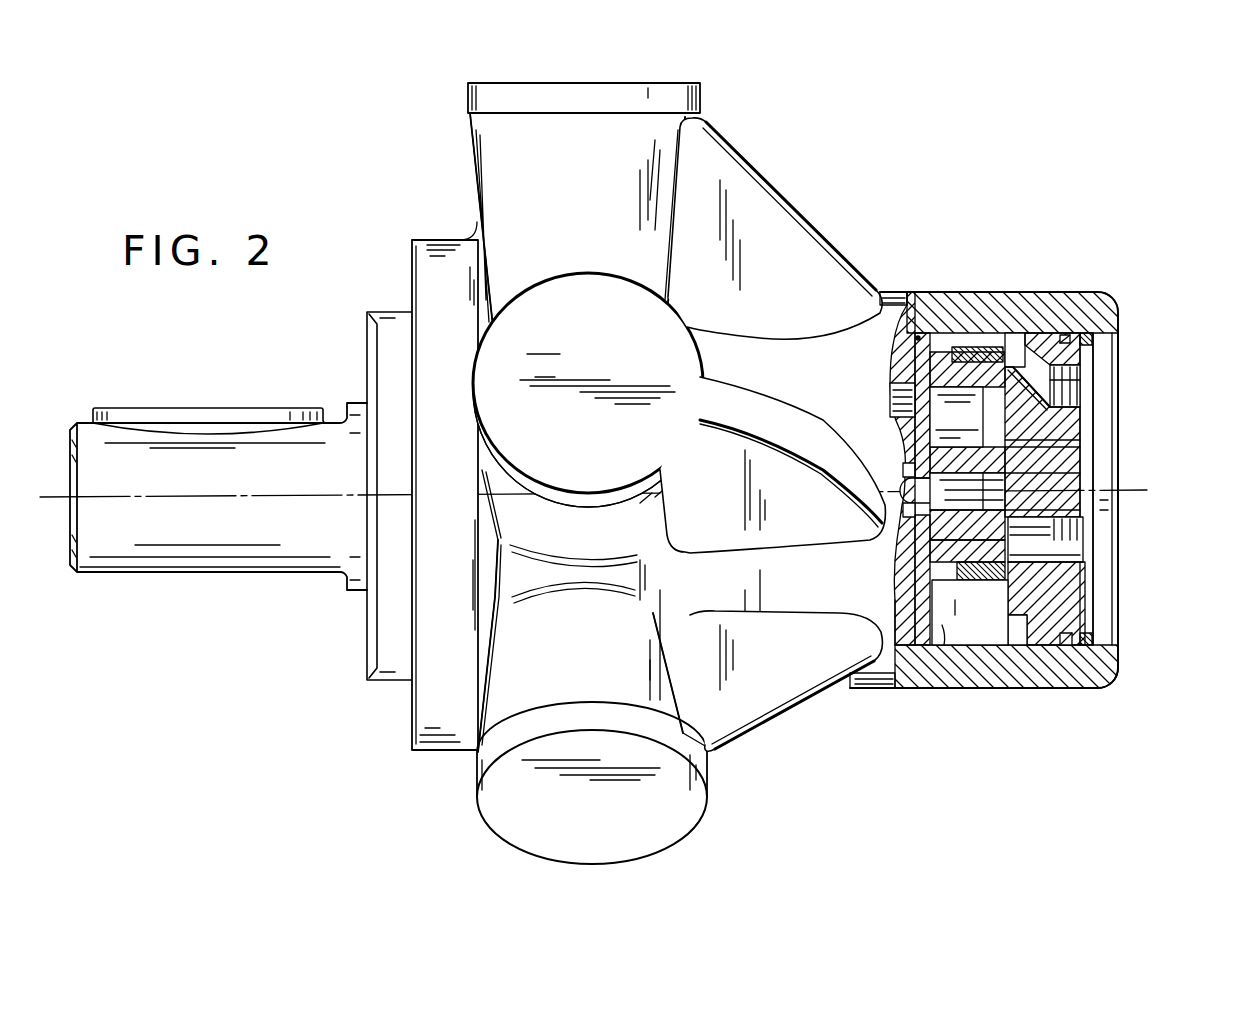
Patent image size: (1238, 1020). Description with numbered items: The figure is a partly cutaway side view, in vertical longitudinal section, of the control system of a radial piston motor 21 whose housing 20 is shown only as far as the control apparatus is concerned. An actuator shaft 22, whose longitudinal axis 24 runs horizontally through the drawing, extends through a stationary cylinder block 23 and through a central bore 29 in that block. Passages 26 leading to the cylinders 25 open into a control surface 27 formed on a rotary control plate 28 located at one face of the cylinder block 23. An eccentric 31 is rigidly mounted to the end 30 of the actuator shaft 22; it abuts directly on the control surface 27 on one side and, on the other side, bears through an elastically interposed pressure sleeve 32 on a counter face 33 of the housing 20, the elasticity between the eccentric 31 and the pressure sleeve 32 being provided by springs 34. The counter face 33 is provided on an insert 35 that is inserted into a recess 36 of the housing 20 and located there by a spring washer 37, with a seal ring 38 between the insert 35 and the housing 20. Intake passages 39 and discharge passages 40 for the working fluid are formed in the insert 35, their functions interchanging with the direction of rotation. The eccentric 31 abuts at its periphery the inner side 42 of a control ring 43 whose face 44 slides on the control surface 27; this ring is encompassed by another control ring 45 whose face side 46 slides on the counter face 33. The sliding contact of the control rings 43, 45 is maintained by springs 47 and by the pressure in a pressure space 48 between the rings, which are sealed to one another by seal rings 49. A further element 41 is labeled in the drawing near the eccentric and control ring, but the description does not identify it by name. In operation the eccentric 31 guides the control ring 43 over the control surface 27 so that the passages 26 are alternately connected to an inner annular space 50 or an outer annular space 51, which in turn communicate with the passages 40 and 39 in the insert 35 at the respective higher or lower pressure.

The housing 20 is at (1092, 680).
The motor 21 is at (787, 733).
The actuator shaft 22 is at (123, 550).
The stationary cylinder block 23 is at (440, 700).
The longitudinal axis 24 is at (213, 497).
The cylinders 25 is at (488, 157).
The passages 26 is at (890, 385).
The control surface 27 is at (945, 345).
The rotary control plate 28 is at (922, 345).
The central bore 29 is at (903, 523).
The end of the actuator shaft 30 is at (1080, 490).
The eccentric 31 is at (903, 540).
The pressure sleeve 32 is at (1080, 473).
The counter face 33 is at (1003, 605).
The springs 34 is at (1080, 447).
The insert 35 is at (1073, 590).
The recess 36 is at (1022, 645).
The spring washer 37 is at (1117, 658).
The seal ring 38 is at (1067, 333).
The intake passages 39 is at (1080, 377).
The discharge passages 40 is at (1080, 523).
The shaft passage 41 is at (897, 437).
The inner side of the control ring 42 is at (890, 405).
The control ring 43 is at (977, 345).
The face of the control ring 44 is at (893, 367).
The control ring 45 is at (1020, 345).
The face side 46 is at (1080, 563).
The springs 47 is at (958, 345).
The pressure space 48 is at (1000, 342).
The seal rings 49 is at (967, 580).
The inner annular space 50 is at (1080, 417).
The outer annular space 51 is at (920, 692).